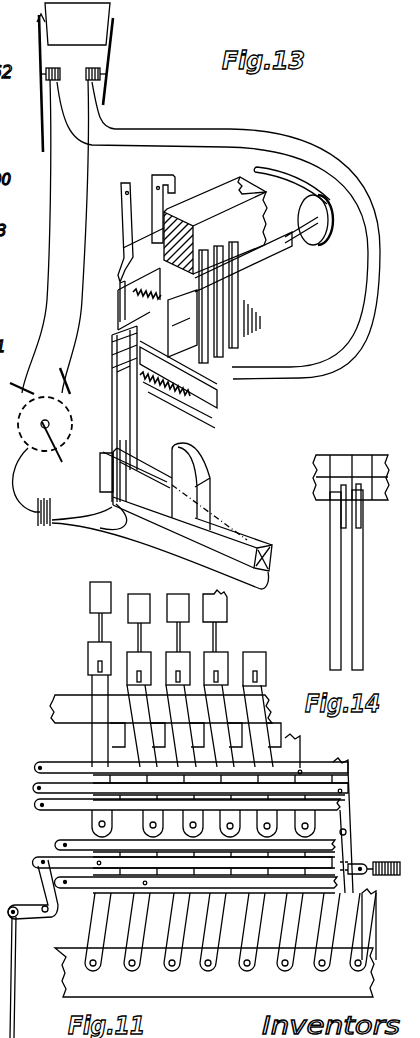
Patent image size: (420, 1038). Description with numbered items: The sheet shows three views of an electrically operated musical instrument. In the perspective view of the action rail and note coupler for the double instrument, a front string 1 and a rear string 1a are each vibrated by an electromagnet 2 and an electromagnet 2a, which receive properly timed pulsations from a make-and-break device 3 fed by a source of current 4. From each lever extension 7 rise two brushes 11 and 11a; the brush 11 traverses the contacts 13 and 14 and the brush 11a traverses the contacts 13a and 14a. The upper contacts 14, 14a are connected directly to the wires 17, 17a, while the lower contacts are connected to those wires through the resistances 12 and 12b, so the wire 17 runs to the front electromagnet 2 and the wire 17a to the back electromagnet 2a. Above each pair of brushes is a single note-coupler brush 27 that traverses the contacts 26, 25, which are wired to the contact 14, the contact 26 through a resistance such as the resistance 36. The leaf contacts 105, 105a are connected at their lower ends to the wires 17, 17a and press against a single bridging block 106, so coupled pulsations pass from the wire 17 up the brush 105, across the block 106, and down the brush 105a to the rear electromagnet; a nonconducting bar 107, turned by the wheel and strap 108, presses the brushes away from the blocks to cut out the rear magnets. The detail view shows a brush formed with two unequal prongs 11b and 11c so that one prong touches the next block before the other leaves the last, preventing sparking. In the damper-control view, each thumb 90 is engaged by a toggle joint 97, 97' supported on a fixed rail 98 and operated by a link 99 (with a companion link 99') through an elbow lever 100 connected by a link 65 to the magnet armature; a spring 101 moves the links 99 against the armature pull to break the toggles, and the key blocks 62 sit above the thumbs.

In FIG. 13, the string 1 is at (42, 118).
In FIG. 13, the rear string 1a is at (106, 92).
In FIG. 13, the electromagnet 2 is at (58, 78).
In FIG. 13, the electromagnet of the back instrument 2a is at (108, 68).
In FIG. 13, the make-and-break device 3 is at (68, 415).
In FIG. 13, the source of current 4 is at (141, 518).
In FIG. 13, the lever extension 7 is at (240, 540).
In FIG. 13, the brush 11 is at (135, 398).
In FIG. 14, the brush 11 is at (352, 628).
In FIG. 13, the brush 11a is at (118, 430).
In FIG. 14, the prong 11b is at (343, 512).
In FIG. 14, the prong 11c is at (359, 515).
In FIG. 13, the resistance 12 is at (165, 402).
In FIG. 13, the resistance 12b is at (177, 403).
In FIG. 13, the contact 13 is at (146, 366).
In FIG. 13, the contact 13a is at (118, 380).
In FIG. 13, the contact 14 is at (140, 330).
In FIG. 13, the contact 14a is at (113, 352).
In FIG. 13, the wire 17 is at (200, 145).
In FIG. 13, the wire 17a is at (265, 132).
In FIG. 13, the contact 25 is at (118, 305).
In FIG. 13, the contact 26 is at (118, 290).
In FIG. 13, the brush 27 is at (125, 188).
In FIG. 13, the resistance 36 is at (147, 284).
In FIG. 11, the key block 62 is at (88, 598).
In FIG. 11, the link 65 is at (14, 1020).
In FIG. 11, the thumb 90 is at (88, 672).
In FIG. 11, the toggle joint member 97 is at (219, 930).
In FIG. 11, the toggle joint member 97' is at (170, 721).
In FIG. 11, the fixed rail 98 is at (205, 990).
In FIG. 11, the link 99 is at (190, 803).
In FIG. 11, the bar 99' is at (178, 865).
In FIG. 11, the elbow lever 100 is at (42, 889).
In FIG. 11, the spring 101 is at (383, 857).
In FIG. 13, the leaf contact 105 is at (250, 328).
In FIG. 13, the leaf contact 105a is at (215, 303).
In FIG. 13, the bridging block 106 is at (209, 250).
In FIG. 13, the bar 107 is at (258, 250).
In FIG. 13, the wheel and strap 108 is at (317, 240).